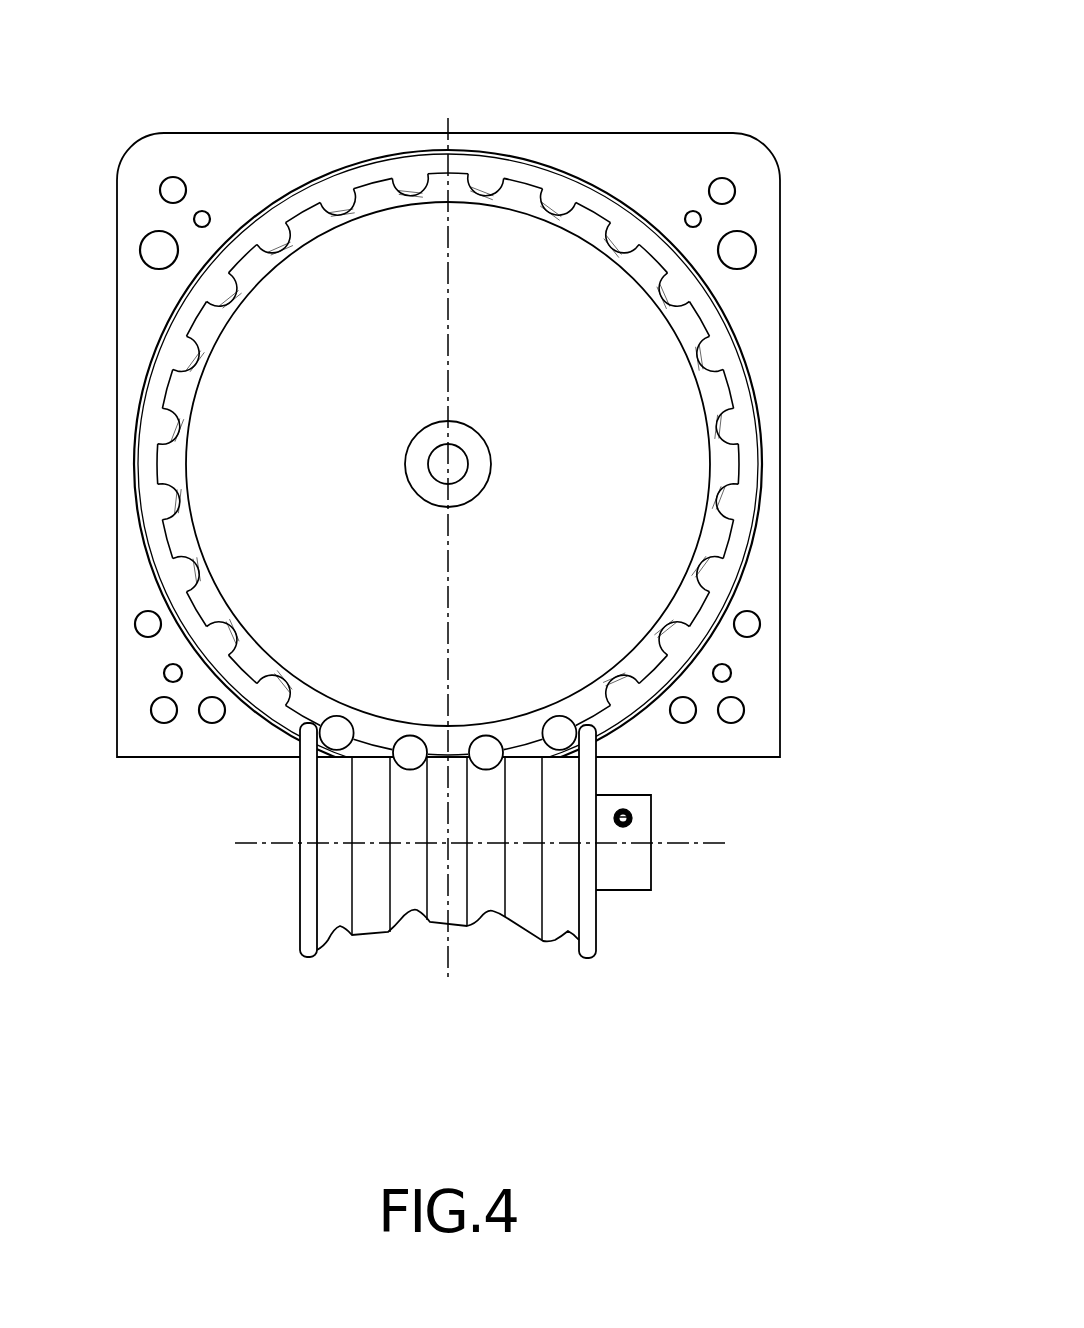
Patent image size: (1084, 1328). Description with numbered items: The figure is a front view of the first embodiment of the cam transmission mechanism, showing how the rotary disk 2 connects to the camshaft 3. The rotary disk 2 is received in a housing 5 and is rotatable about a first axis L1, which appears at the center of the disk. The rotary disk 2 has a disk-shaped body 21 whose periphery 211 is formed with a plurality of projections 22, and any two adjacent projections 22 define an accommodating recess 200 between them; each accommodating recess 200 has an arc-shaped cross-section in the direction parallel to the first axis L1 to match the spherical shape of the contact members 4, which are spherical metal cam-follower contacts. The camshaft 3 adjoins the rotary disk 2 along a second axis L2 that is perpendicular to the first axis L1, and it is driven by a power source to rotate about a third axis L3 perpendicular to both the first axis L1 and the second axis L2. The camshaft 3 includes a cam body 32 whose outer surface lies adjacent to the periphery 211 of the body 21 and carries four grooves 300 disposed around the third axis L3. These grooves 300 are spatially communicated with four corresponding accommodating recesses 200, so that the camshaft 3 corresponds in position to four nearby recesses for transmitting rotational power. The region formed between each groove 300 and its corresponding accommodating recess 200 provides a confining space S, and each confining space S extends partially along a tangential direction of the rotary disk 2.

The rotary disk 2 is at (366, 166).
The housing 5 is at (663, 150).
The disk-shaped body 21 is at (501, 223).
The periphery 211 is at (682, 338).
The projections 22 is at (720, 396).
The accommodating recess 200 is at (721, 498).
The first axis L1 is at (448, 464).
The second axis L2 is at (455, 570).
The third axis L3 is at (505, 844).
The contact member 4 is at (412, 737).
The camshaft 3 is at (615, 950).
The cam body 32 is at (368, 887).
The groove 300 is at (408, 930).
The confining space S is at (387, 757).